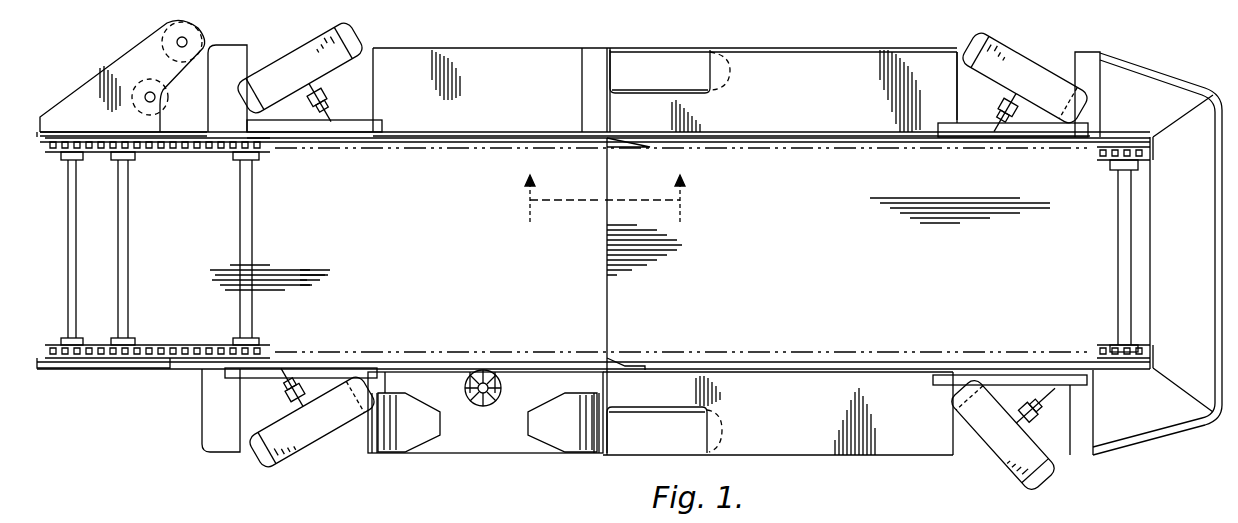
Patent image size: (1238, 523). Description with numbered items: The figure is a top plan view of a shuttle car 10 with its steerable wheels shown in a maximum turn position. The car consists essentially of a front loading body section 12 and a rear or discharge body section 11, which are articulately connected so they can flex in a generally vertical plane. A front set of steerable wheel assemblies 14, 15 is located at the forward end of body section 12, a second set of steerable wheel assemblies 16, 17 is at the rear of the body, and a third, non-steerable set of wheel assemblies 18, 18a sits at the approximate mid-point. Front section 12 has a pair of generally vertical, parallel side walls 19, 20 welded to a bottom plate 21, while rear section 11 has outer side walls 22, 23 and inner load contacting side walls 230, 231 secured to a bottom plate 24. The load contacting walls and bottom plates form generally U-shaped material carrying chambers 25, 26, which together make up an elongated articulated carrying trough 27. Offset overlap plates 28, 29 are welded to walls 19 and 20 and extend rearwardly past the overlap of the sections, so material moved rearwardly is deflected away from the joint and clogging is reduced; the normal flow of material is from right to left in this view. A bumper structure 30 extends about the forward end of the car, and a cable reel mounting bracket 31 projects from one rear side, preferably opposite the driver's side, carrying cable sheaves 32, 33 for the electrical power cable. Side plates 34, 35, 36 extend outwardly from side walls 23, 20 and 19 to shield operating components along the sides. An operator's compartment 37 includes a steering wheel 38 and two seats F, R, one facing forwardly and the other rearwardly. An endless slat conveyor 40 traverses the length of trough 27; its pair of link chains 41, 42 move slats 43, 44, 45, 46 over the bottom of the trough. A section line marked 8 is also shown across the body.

The shuttle car 10 is at (889, 460).
The rear or discharge body section 11 is at (513, 47).
The front loading body section 12 is at (845, 47).
The steerable wheel assembly 14 is at (1051, 432).
The steerable wheel assembly 15 is at (1021, 46).
The steerable wheel assembly 16 is at (262, 436).
The steerable wheel assembly 17 is at (297, 38).
The wheel assembly 18 is at (637, 459).
The wheel assembly 18a is at (661, 47).
The side wall 19 is at (866, 370).
The side wall 20 is at (868, 140).
The bottom plate or wall 21 is at (810, 175).
The outer side wall 22 is at (550, 368).
The outer side wall 23 is at (517, 112).
The bottom plate or wall 24 is at (418, 172).
The material carrying chamber 25 is at (355, 259).
The material carrying chamber 26 is at (733, 250).
The carrying trough 27 is at (1068, 258).
The offset overlap plate 28 is at (632, 360).
The offset overlap plate 29 is at (642, 148).
The bumper structure 30 is at (1224, 400).
The cable reel mounting bracket 31 is at (122, 62).
The cable sheave 32 is at (178, 22).
The cable sheave 33 is at (168, 92).
The side plate 34 is at (428, 60).
The side plate 35 is at (800, 62).
The side plate 36 is at (790, 445).
The operator's compartment 37 is at (456, 440).
The steering wheel 38 is at (483, 406).
The endless slat conveyor 40 is at (63, 240).
The link chain 41 is at (192, 345).
The link chain 42 is at (216, 158).
The slat 43 is at (68, 195).
The slat 44 is at (128, 254).
The slat 45 is at (252, 232).
The slat 46 is at (1118, 303).
The inner load contacting side wall 230 is at (420, 362).
The inner load contacting side wall 231 is at (468, 148).
The section line 8 is at (602, 213).
The seat F is at (416, 430).
The seat R is at (555, 428).